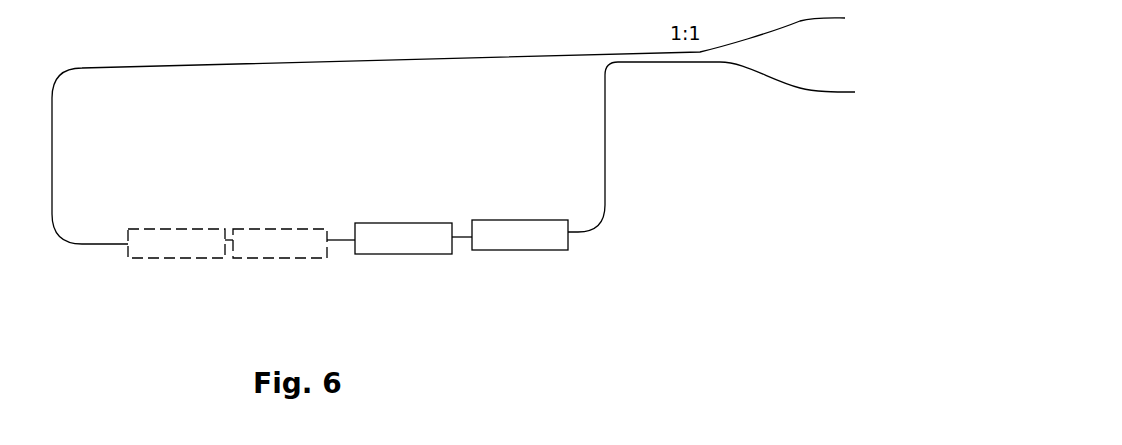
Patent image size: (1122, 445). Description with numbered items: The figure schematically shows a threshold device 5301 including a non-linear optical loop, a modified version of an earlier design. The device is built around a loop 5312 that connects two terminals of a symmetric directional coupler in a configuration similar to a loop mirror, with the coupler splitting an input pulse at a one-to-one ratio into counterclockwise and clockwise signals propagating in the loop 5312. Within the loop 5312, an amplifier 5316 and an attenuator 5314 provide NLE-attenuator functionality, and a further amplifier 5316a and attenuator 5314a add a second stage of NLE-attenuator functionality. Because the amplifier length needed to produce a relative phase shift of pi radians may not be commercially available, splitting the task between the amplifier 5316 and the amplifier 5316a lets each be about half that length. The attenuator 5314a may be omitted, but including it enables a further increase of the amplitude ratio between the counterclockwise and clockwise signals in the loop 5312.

The threshold device 5301 is at (495, 261).
The loop 5312 is at (605, 135).
The attenuator 5314 is at (540, 250).
The attenuator 5314a is at (265, 258).
The amplifier 5316 is at (413, 254).
The amplifier 5316a is at (133, 258).